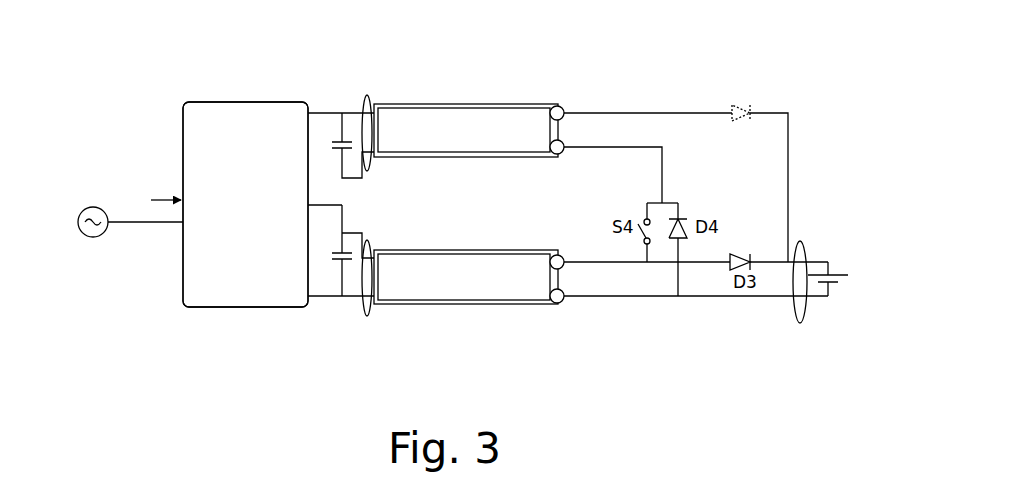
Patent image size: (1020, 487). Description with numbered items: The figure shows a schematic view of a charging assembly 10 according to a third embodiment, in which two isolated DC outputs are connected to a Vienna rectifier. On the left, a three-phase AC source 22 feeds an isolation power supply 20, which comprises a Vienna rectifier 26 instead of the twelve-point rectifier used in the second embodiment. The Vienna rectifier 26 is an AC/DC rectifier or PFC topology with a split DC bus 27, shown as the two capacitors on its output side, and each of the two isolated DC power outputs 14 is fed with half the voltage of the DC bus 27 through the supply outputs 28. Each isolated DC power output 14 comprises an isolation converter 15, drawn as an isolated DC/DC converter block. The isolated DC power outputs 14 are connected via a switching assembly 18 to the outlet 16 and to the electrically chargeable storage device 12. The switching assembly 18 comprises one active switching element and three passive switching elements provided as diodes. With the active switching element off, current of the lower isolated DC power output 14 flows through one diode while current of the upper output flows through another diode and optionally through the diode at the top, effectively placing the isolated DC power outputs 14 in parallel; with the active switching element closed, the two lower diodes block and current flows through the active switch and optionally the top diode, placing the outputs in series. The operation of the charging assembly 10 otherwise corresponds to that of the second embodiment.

The charging assembly 10 is at (617, 96).
The electrically chargeable storage device 12 is at (833, 290).
The isolated DC power output 14 is at (527, 100).
The isolation converter 15 is at (463, 107).
The outlet 16 is at (800, 325).
The switching assembly 18 is at (688, 101).
The isolation power supply 20 is at (262, 96).
The three-phase AC source 22 is at (93, 238).
The Vienna rectifier 26 is at (250, 258).
The split DC bus 27 is at (334, 96).
The supply output 28 is at (366, 97).